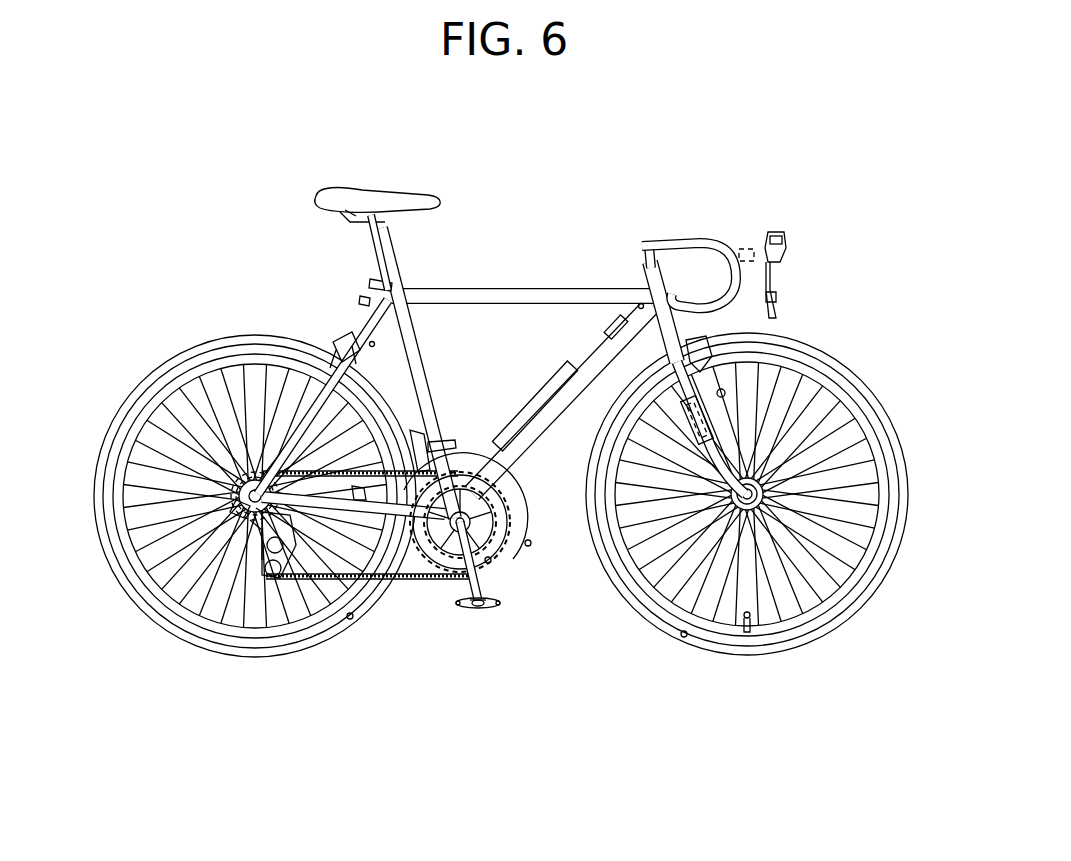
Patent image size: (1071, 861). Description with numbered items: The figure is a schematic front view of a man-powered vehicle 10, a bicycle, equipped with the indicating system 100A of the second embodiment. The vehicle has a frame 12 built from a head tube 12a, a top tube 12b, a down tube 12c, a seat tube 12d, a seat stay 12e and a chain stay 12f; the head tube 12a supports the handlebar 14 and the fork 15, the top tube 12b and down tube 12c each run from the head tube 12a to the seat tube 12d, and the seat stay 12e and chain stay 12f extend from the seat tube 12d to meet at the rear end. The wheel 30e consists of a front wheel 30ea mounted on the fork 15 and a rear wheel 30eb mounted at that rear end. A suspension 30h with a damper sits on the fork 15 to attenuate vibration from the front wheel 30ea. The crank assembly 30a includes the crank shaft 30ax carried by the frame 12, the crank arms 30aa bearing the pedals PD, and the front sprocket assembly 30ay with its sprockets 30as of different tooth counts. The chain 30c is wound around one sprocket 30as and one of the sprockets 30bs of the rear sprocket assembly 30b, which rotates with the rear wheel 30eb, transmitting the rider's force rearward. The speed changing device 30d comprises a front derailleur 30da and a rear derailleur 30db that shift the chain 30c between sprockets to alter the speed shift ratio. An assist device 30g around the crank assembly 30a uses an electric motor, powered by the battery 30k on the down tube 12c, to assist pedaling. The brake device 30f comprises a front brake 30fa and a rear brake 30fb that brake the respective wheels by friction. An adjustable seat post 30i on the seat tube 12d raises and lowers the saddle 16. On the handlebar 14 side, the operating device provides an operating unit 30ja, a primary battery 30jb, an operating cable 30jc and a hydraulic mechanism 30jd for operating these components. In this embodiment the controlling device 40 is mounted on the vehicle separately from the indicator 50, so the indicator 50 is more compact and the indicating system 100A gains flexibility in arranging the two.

The indicating system 100A is at (858, 110).
The man-powered vehicle 10 is at (652, 128).
The frame 12 is at (448, 323).
The head tube 12a is at (680, 345).
The top tube 12b is at (500, 303).
The down tube 12c is at (538, 430).
The seat tube 12d is at (425, 390).
The seat stay 12e is at (312, 343).
The chain stay 12f is at (365, 503).
The handlebar 14 is at (725, 248).
The fork 15 is at (680, 370).
The saddle 16 is at (398, 192).
The controlling device 40 is at (610, 328).
The indicator 50 is at (688, 225).
The pedals PD is at (508, 498).
The crank assembly 30a is at (602, 673).
The crank arms 30aa is at (500, 604).
The crank shaft 30ax is at (450, 598).
The front sprocket assembly 30ay is at (531, 636).
The sprockets 30as is at (632, 628).
The rear sprocket assembly 30b is at (228, 282).
The sprockets 30bs is at (250, 488).
The chain 30c is at (418, 577).
The speed changing device 30d is at (315, 723).
The front derailleur 30da is at (358, 492).
The rear derailleur 30db is at (240, 512).
The wheel 30e is at (592, 777).
The front wheel 30ea is at (682, 636).
The rear wheel 30eb is at (352, 618).
The brake device 30f is at (615, 180).
The front brake 30fa is at (640, 305).
The rear brake 30fb is at (373, 342).
The assist device 30g is at (522, 527).
The suspension 30h is at (706, 422).
The adjustable seat post 30i is at (388, 250).
The operating unit 30ja is at (777, 233).
The primary battery 30jb is at (760, 256).
The operating cable 30jc is at (770, 296).
The hydraulic mechanism 30jd is at (705, 412).
The battery 30k is at (553, 362).